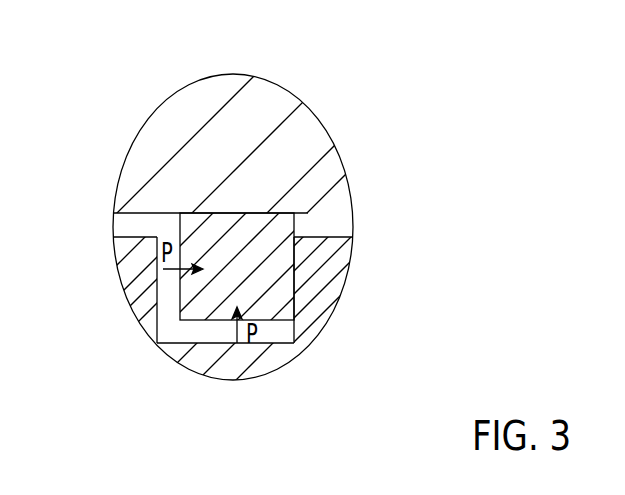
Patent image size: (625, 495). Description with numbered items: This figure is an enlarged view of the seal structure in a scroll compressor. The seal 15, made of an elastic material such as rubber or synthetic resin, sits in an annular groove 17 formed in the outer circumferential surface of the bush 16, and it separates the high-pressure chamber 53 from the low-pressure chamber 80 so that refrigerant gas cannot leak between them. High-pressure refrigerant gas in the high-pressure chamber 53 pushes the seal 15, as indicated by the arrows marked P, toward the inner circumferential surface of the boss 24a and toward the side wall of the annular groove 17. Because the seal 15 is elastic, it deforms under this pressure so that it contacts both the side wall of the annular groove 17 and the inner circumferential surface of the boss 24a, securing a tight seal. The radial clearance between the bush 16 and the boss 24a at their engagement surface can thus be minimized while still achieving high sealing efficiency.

The boss 24a is at (162, 137).
The low-pressure chamber 80 is at (333, 217).
The seal 15 is at (270, 270).
The high-pressure chamber 53 is at (130, 225).
The annular groove 17 is at (190, 333).
The bush 16 is at (255, 360).